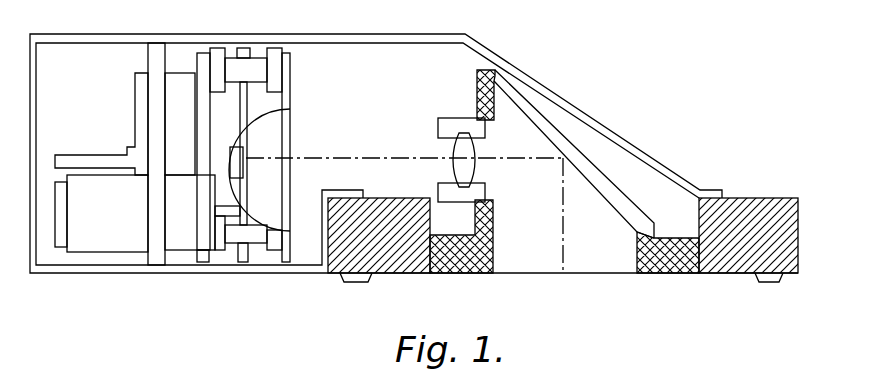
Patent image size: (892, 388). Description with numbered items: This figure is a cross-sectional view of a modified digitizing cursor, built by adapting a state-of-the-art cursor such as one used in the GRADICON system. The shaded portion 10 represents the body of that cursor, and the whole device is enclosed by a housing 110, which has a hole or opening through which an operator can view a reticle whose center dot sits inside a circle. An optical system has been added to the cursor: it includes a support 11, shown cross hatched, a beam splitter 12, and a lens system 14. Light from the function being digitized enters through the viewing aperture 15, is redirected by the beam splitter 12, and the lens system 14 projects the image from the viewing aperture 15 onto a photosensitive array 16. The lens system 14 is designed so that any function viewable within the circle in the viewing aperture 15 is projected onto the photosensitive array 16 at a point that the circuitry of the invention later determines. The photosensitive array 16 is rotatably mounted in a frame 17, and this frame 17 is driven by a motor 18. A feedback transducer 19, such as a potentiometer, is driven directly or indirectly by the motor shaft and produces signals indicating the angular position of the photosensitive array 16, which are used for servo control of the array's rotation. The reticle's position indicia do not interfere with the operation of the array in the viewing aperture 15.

The housing 110 is at (507, 56).
The body of a cursor 10 is at (395, 273).
The support 11 is at (468, 273).
The beam splitter 12 is at (615, 183).
The lens system 14 is at (471, 152).
The viewing aperture 15 is at (568, 305).
The photosensitive array 16 is at (248, 153).
The frame 17 is at (404, 173).
The motor 18 is at (118, 218).
The feedback transducer 19 is at (62, 247).